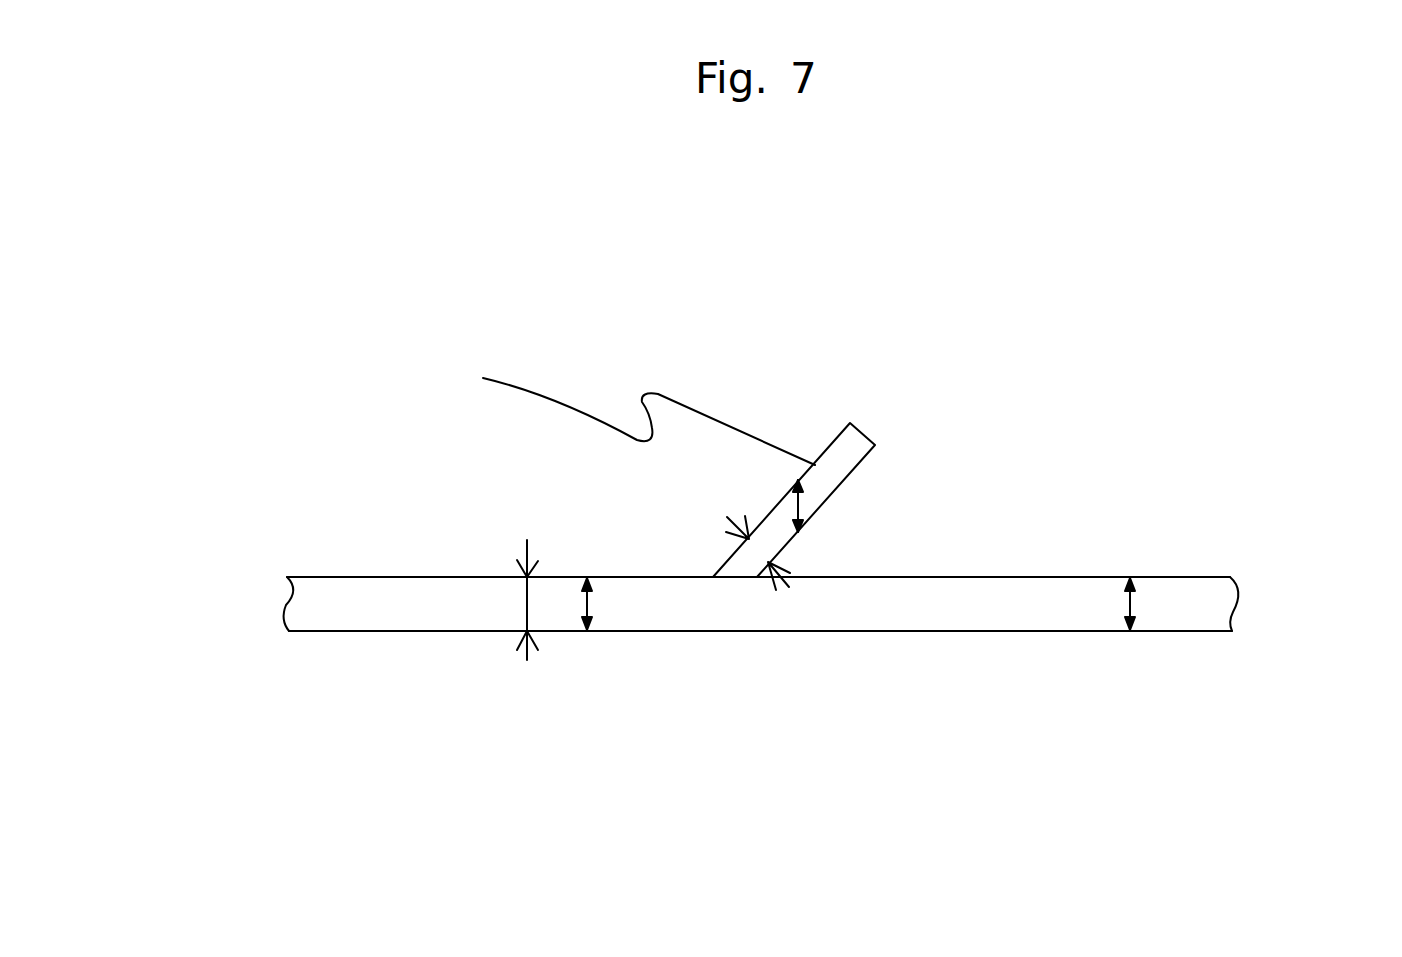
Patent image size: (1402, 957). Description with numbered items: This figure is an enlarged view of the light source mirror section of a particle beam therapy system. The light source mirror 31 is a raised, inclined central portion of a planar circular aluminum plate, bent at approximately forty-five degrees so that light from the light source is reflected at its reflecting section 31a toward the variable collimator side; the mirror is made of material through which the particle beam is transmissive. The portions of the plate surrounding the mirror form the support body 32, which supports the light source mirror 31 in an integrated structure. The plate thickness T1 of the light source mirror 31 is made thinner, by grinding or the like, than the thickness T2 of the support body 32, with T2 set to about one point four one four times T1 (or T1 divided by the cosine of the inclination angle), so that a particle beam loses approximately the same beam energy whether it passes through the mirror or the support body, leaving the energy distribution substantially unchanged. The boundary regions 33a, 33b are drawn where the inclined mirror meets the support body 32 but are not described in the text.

The light source mirror 31 is at (453, 390).
The reflecting section 31a is at (822, 504).
The support body 32 is at (405, 632).
The weld portion 33a is at (797, 505).
The weld portion 33b is at (590, 605).
The plate thickness of the light source mirror T1 is at (749, 525).
The thickness of the support body T2 is at (523, 574).